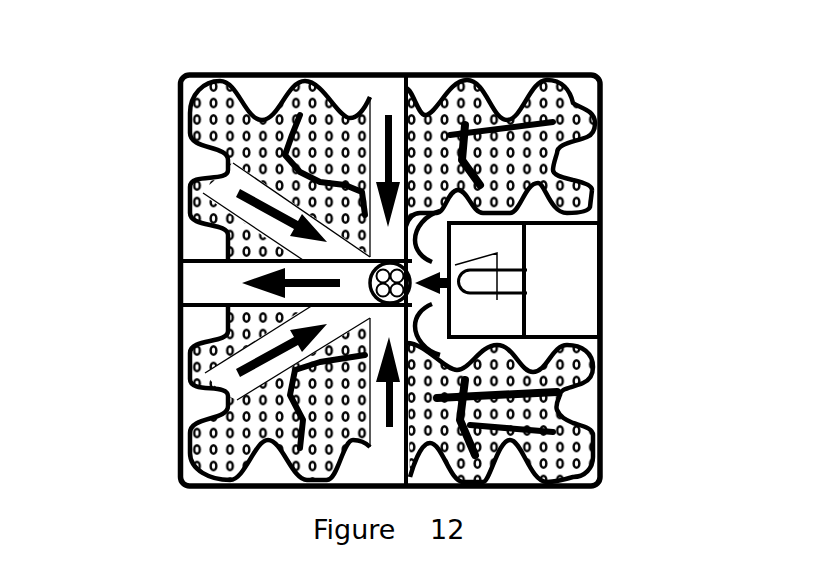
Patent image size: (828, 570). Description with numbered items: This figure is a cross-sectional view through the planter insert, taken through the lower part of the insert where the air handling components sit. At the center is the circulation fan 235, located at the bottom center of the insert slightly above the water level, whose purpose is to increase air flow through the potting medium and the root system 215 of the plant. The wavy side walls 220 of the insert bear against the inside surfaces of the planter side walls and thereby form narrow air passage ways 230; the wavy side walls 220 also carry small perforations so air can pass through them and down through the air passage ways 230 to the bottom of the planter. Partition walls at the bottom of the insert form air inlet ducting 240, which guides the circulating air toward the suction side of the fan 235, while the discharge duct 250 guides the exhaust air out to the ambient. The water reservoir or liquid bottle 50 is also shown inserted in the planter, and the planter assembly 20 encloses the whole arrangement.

The air treatment apparatus 20 is at (140, 102).
The wavy side walls 220 is at (265, 117).
The root system 215 is at (567, 97).
The air passage ways 230 is at (577, 157).
The discharge duct 250 is at (222, 288).
The air inlet ducting 240 is at (233, 375).
The water reservoir/liquid bottle 50 is at (602, 282).
The circulation fan 235 is at (412, 290).